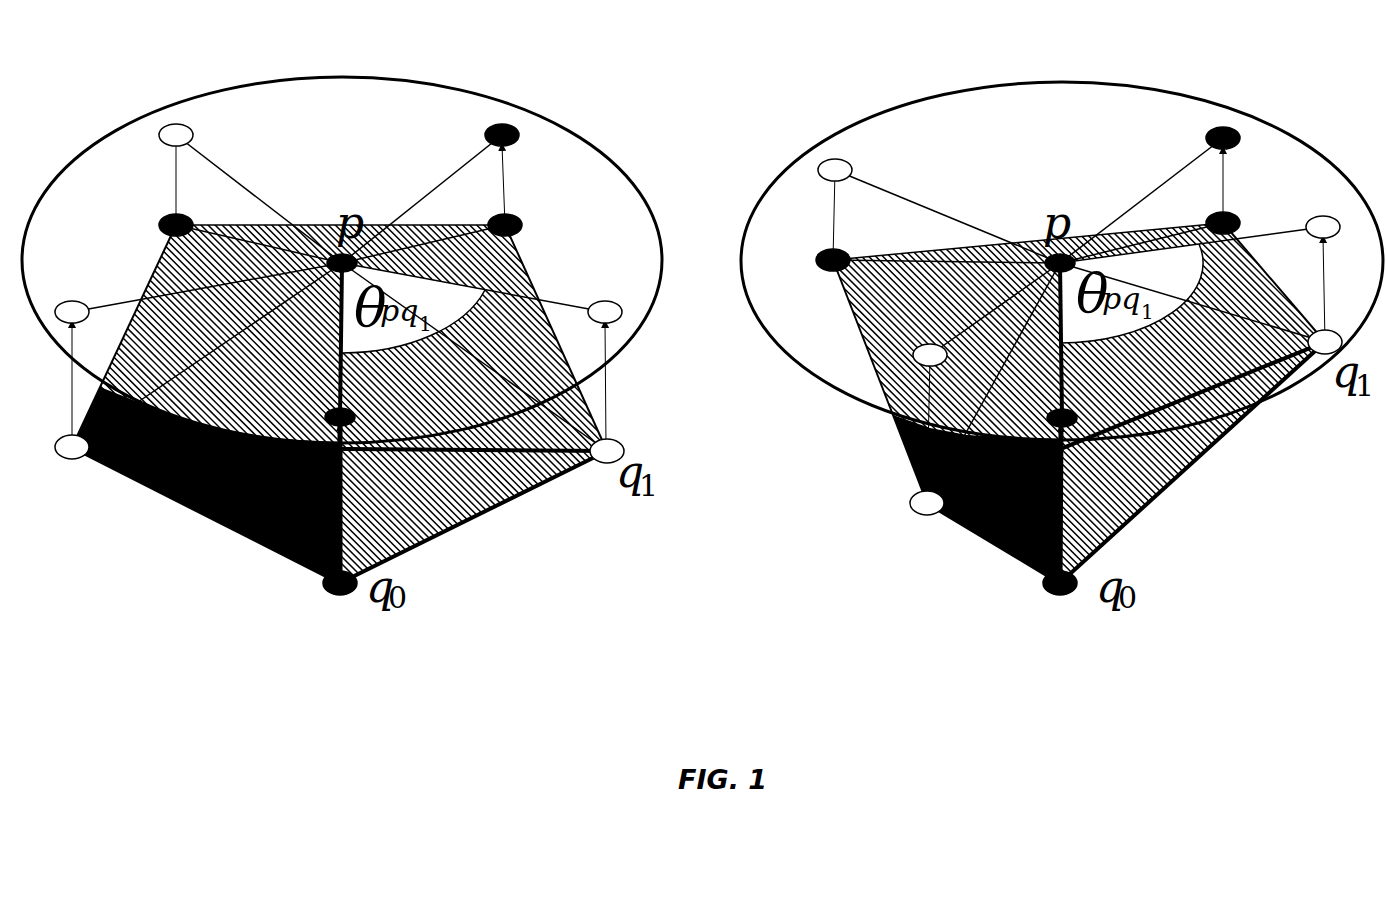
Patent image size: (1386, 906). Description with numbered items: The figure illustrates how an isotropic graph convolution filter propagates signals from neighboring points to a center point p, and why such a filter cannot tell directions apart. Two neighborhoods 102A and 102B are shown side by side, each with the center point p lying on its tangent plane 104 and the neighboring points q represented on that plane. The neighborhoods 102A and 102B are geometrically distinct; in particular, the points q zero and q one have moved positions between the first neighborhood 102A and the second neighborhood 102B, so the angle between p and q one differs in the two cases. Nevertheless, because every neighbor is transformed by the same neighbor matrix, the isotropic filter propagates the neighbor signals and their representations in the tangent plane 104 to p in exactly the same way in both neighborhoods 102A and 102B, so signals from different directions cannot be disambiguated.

The tangent plane 104 is at (398, 80).
The first neighborhood 102A is at (143, 505).
The second neighborhood 102B is at (963, 542).